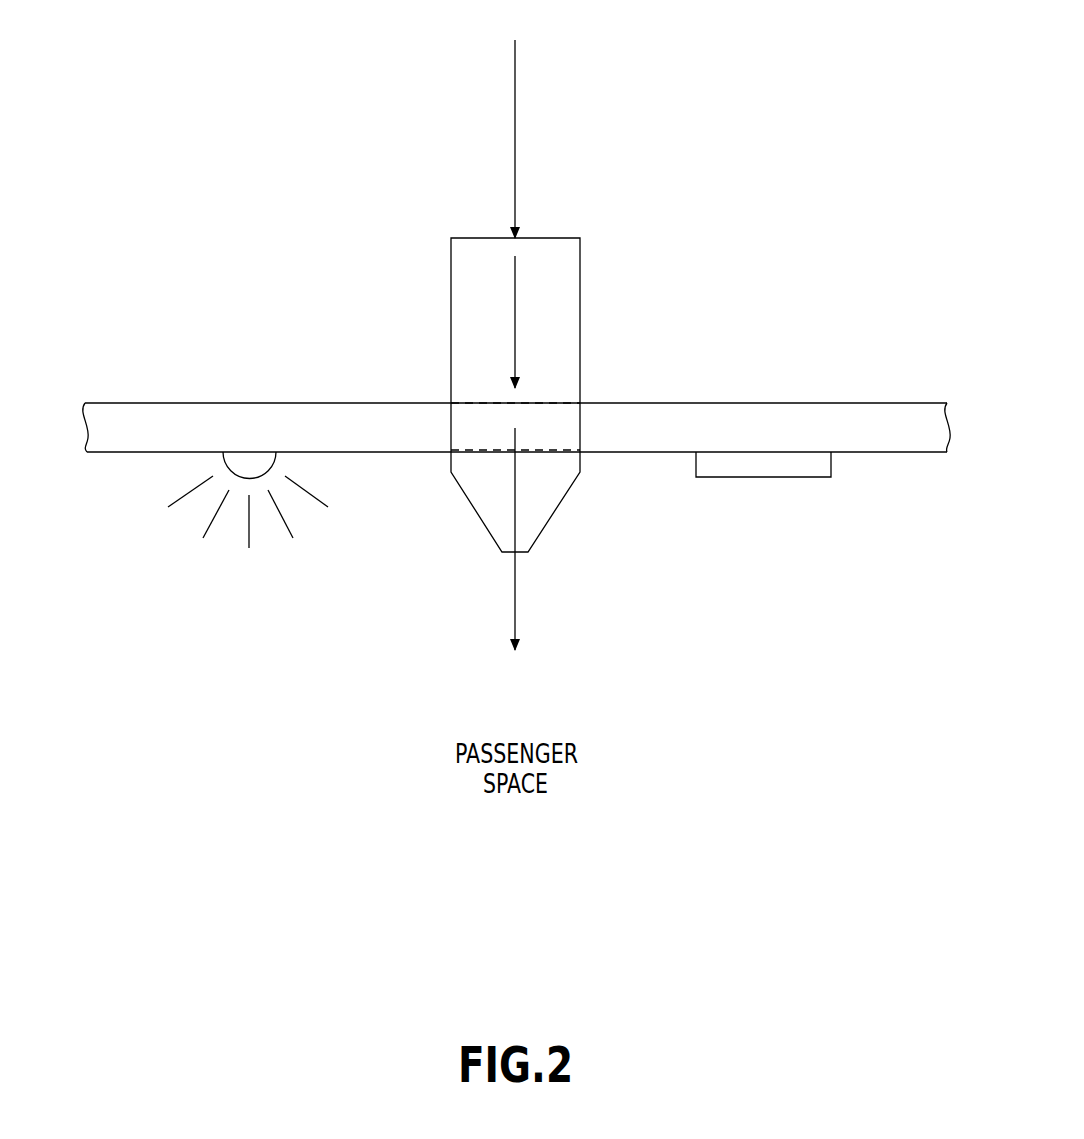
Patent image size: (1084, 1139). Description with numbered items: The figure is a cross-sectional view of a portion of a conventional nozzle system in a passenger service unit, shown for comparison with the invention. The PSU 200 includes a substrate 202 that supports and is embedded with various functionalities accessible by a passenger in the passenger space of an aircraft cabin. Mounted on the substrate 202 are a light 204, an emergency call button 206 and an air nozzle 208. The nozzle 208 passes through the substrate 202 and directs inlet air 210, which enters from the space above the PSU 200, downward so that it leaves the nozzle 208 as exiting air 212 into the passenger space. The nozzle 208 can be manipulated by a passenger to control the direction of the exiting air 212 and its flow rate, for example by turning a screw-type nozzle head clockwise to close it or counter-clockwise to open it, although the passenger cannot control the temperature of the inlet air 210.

The passenger service unit 200 is at (771, 86).
The substrate 202 is at (137, 403).
The light 204 is at (223, 461).
The emergency call button 206 is at (760, 477).
The air nozzle 208 is at (555, 512).
The inlet air 210 is at (515, 130).
The exiting air 212 is at (515, 597).